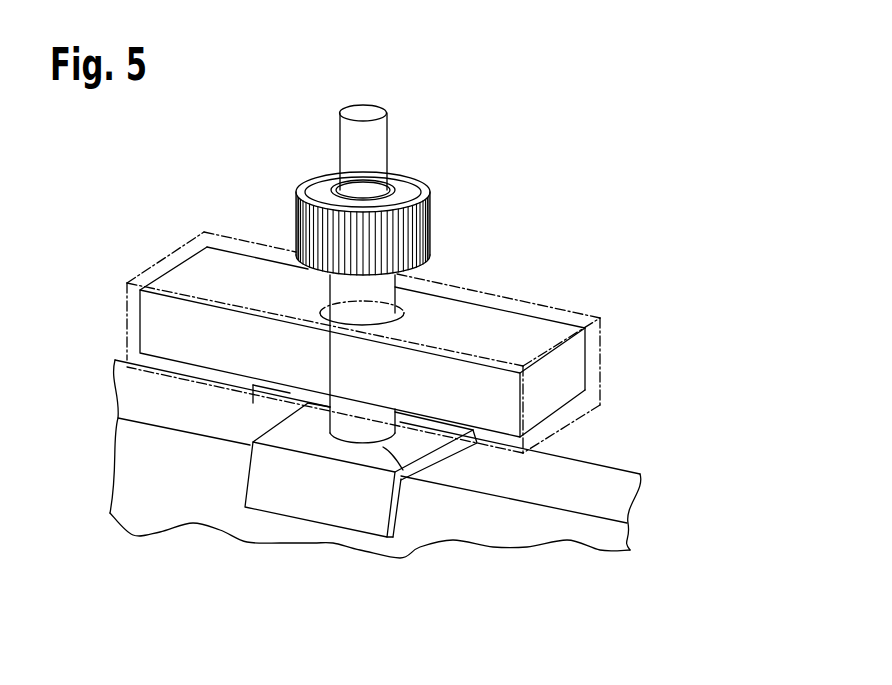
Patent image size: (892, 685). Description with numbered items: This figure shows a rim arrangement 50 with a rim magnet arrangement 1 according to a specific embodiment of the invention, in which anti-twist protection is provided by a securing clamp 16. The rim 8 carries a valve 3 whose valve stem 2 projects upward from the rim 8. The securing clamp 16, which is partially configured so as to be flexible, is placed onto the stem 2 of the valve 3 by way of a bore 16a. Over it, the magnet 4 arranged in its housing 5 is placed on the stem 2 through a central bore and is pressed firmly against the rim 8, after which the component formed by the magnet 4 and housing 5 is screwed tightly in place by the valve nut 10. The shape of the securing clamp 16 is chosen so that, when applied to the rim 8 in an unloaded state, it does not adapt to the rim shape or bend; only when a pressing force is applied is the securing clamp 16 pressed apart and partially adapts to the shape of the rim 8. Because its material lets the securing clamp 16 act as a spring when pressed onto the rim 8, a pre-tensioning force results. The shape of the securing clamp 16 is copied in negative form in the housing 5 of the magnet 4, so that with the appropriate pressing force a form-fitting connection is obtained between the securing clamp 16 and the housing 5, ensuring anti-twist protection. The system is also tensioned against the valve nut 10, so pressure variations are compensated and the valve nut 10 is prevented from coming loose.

The rim magnet arrangement 1 is at (640, 111).
The valve stem 2 is at (363, 155).
The valve 3 is at (538, 131).
The magnet 4 is at (555, 375).
The housing 5 is at (590, 337).
The rim 8 is at (587, 492).
The valve nut 10 is at (427, 233).
The securing clamp 16 is at (331, 500).
The bore 16a is at (404, 470).
The rim arrangement 50 is at (686, 160).